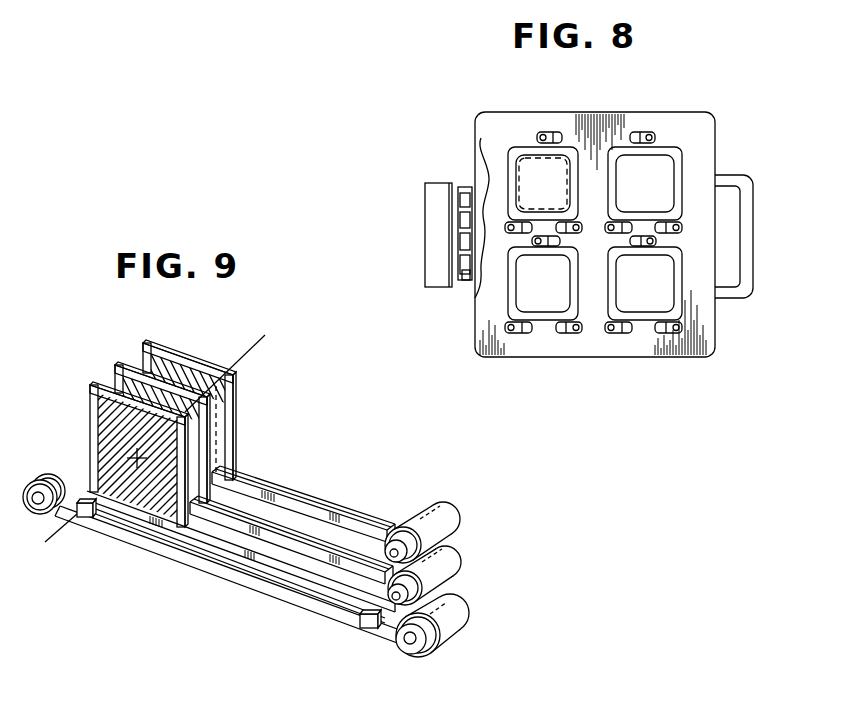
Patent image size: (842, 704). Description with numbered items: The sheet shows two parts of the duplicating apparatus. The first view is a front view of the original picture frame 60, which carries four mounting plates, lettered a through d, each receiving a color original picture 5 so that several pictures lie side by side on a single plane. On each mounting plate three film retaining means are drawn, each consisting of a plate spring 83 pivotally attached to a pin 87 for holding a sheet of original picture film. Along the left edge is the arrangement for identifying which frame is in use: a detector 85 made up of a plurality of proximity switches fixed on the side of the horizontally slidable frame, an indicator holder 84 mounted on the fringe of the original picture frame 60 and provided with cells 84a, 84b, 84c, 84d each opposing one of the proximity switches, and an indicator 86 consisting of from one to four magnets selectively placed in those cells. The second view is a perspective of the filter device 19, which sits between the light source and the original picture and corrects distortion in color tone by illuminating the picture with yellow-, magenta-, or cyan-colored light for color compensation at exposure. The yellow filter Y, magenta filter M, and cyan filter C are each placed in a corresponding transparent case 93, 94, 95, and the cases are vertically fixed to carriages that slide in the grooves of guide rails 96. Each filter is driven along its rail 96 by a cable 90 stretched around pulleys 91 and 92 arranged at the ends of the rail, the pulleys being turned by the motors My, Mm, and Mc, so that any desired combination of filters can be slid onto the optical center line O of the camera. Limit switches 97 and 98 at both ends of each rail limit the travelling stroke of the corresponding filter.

In FIG. 8, the original picture frame 60 is at (621, 114).
In FIG. 8, the plate spring 83 is at (549, 132).
In FIG. 8, the pin 87 is at (541, 131).
In FIG. 8, the color original picture 5 is at (524, 178).
In FIG. 8, the detector 85 is at (431, 183).
In FIG. 8, the indicator holder 84 is at (463, 187).
In FIG. 8, the cell 84a is at (458, 198).
In FIG. 8, the cell 84b is at (458, 220).
In FIG. 8, the cell 84c is at (458, 243).
In FIG. 8, the cell 84d is at (458, 266).
In FIG. 8, the indicator 86 is at (463, 283).
In FIG. 9, the filter device 19 is at (304, 486).
In FIG. 9, the cable 90 is at (146, 548).
In FIG. 9, the pulley 91 is at (40, 514).
In FIG. 9, the pulley 92 is at (417, 652).
In FIG. 9, the transparent case 93 is at (205, 363).
In FIG. 9, the transparent case 94 is at (118, 366).
In FIG. 9, the transparent case 95 is at (90, 388).
In FIG. 9, the guide rail 96 is at (240, 567).
In FIG. 9, the limit switch 97 is at (369, 629).
In FIG. 9, the limit switch 98 is at (86, 519).
In FIG. 9, the motor My is at (451, 517).
In FIG. 9, the motor Mm is at (452, 565).
In FIG. 9, the motor Mc is at (463, 600).
In FIG. 9, the cyan filter C is at (100, 382).
In FIG. 9, the magenta filter M is at (121, 364).
In FIG. 9, the yellow filter Y is at (167, 353).
In FIG. 9, the optical center line O is at (250, 361).